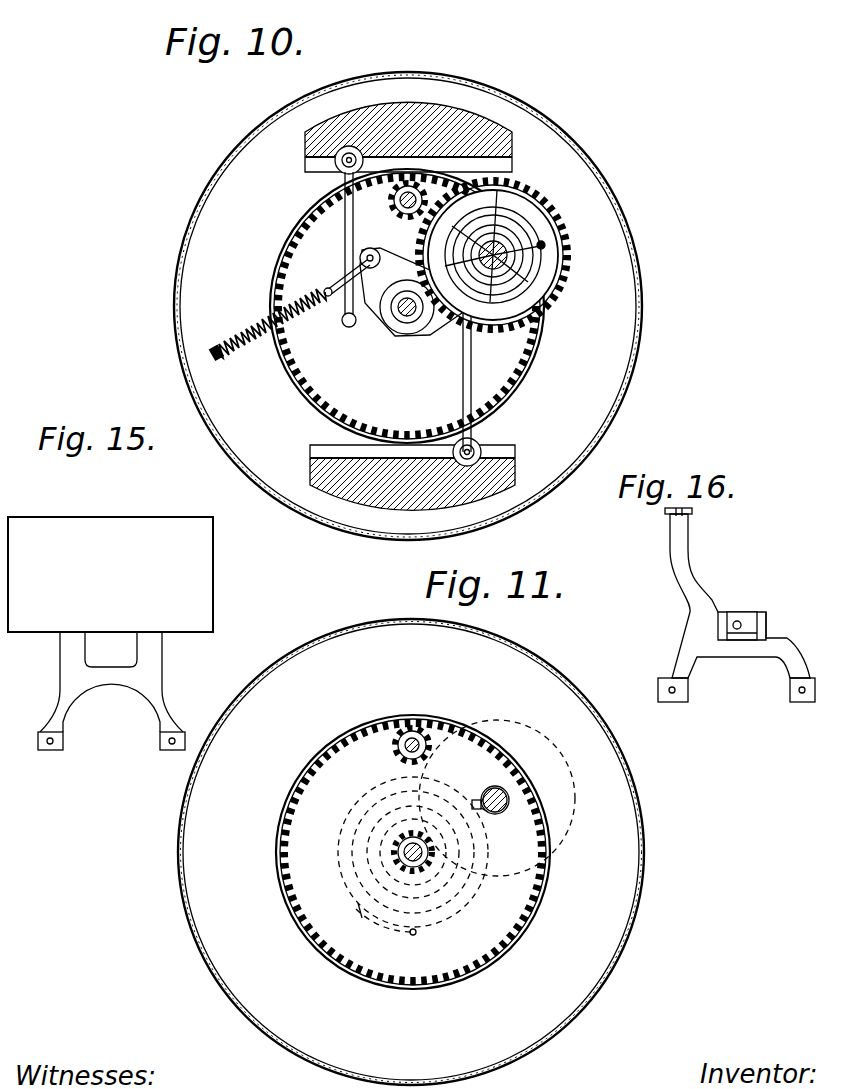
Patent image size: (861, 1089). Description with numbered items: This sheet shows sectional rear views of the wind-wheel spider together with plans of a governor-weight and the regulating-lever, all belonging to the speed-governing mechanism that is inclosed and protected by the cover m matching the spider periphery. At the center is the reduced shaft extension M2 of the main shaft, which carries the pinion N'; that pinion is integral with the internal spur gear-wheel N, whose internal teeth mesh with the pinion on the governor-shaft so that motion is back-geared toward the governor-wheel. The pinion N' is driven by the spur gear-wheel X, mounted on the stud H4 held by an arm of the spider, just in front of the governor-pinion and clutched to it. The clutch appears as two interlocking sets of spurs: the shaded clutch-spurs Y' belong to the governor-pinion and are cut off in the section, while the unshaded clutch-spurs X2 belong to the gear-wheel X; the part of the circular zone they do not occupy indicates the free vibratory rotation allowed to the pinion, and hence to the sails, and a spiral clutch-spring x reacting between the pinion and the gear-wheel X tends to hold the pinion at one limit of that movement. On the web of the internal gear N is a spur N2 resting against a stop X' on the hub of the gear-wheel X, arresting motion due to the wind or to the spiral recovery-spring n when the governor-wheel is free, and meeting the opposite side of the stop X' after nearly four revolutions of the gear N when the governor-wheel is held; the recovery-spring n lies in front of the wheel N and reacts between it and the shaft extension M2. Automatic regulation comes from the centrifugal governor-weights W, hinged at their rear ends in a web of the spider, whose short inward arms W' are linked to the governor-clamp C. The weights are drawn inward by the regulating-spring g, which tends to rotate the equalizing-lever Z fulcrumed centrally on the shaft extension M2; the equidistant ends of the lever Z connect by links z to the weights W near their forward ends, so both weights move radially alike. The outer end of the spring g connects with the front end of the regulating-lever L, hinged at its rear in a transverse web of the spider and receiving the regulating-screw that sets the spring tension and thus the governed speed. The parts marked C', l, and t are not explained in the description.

In FIG. 10, the cover m is at (408, 306).
In FIG. 11, the cover m is at (504, 632).
In FIG. 10, the internal spur gear-wheel N is at (415, 306).
In FIG. 11, the internal spur gear-wheel N is at (413, 849).
In FIG. 10, the centrifugal governor-weight W is at (390, 295).
In FIG. 15, the centrifugal governor-weight W is at (110, 633).
In FIG. 15, the short arm W' is at (31, 692).
In FIG. 10, the link z is at (345, 246).
In FIG. 10, the equalizing-lever Z is at (416, 292).
In FIG. 10, the shaft extension M2 is at (404, 325).
In FIG. 11, the shaft extension M2 is at (405, 848).
In FIG. 10, the spur gear-wheel X is at (500, 255).
In FIG. 11, the spur gear-wheel X is at (504, 798).
In FIG. 10, the clutch-spur of the pinion Y' is at (486, 257).
In FIG. 10, the clutch-spur of the gear-wheel X2 is at (489, 261).
In FIG. 10, the stud H4 is at (460, 264).
In FIG. 11, the stud H4 is at (506, 796).
In FIG. 10, the spiral clutch-spring x is at (519, 260).
In FIG. 10, the governor-clamp C is at (393, 202).
In FIG. 11, the governor-clamp C is at (395, 745).
In FIG. 10, the pinion arbor C' is at (380, 236).
In FIG. 11, the pinion arbor C' is at (387, 766).
In FIG. 10, the link l is at (337, 284).
In FIG. 10, the regulating-spring g is at (255, 344).
In FIG. 10, the regulating-lever L is at (216, 364).
In FIG. 16, the regulating-lever L is at (678, 540).
In FIG. 11, the pinion N' is at (447, 899).
In FIG. 11, the spur N2 is at (476, 800).
In FIG. 11, the stop X' is at (495, 829).
In FIG. 11, the spiral recovery-spring n is at (380, 922).
In FIG. 16, the pivot block t is at (758, 625).